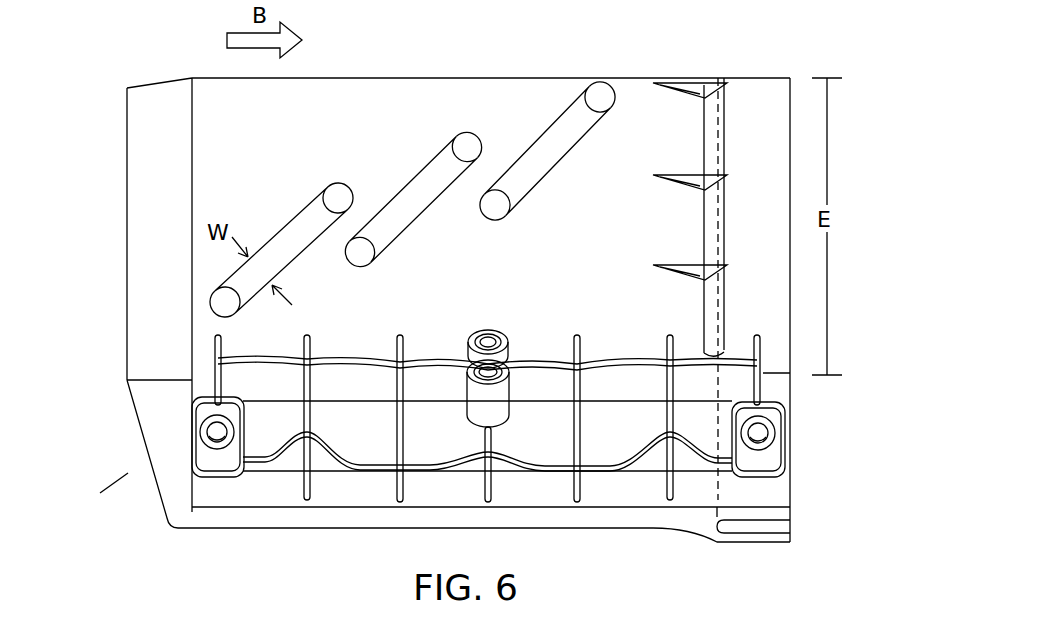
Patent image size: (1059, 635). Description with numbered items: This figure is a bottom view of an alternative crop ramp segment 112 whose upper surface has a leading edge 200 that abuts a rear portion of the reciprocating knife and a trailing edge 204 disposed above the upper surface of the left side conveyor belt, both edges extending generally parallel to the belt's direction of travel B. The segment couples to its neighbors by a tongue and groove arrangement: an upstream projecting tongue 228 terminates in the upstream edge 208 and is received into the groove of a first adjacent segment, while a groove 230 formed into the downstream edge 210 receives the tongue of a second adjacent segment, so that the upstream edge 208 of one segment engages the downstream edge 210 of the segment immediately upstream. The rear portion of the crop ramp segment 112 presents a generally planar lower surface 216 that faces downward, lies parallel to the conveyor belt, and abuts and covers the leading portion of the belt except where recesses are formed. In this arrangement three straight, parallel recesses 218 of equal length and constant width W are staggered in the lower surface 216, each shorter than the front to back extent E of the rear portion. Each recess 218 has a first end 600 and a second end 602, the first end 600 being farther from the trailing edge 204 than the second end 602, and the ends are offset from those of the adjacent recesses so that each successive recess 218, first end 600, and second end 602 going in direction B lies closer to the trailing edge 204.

The crop ramp segment 112 is at (124, 484).
The leading edge 200 is at (278, 530).
The trailing edge 204 is at (583, 77).
The upstream edge 208 is at (127, 262).
The downstream edge 210 is at (790, 318).
The lower surface 216 is at (262, 128).
The recess 218 is at (288, 217).
The upstream projecting tongue 228 is at (160, 172).
The groove 230 is at (718, 152).
The first end 600 is at (222, 310).
The second end 602 is at (347, 192).